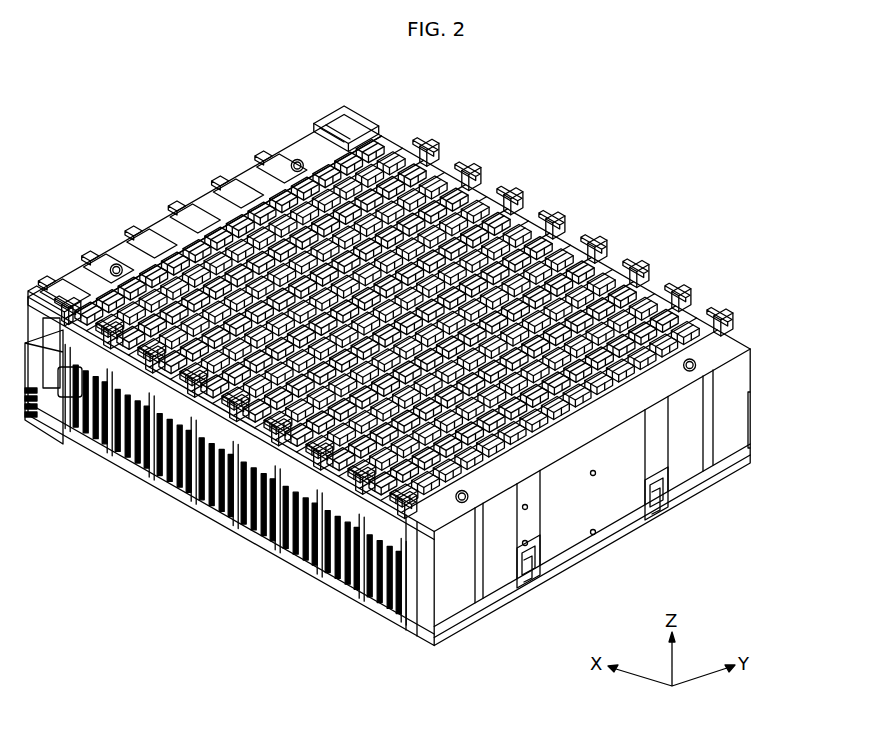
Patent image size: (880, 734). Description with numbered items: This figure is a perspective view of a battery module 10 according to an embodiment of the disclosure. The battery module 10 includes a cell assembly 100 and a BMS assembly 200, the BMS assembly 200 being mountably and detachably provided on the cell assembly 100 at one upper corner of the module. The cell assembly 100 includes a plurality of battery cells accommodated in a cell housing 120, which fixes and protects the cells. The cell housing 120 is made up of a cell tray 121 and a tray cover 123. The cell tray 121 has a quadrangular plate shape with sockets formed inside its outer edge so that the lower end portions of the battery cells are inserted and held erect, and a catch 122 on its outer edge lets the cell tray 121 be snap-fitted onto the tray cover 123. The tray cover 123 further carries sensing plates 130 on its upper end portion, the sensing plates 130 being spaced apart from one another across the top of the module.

The battery module 10 is at (158, 98).
The cell assembly 100 is at (534, 229).
The cell housing 120 is at (804, 398).
The cell tray 121 is at (796, 450).
The catch 122 is at (662, 498).
The tray cover 123 is at (796, 401).
The sensing plate 130 is at (633, 322).
The BMS assembly 200 is at (356, 116).